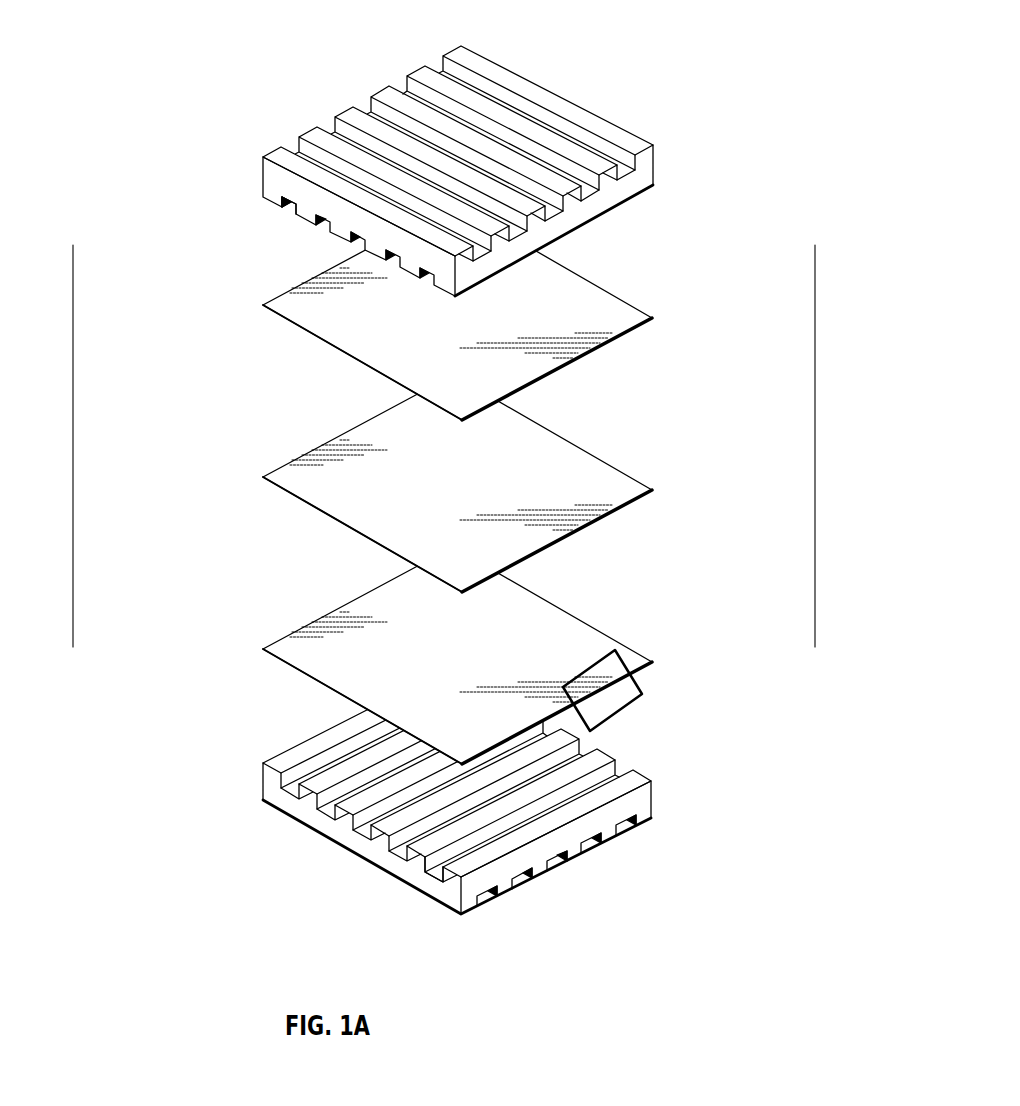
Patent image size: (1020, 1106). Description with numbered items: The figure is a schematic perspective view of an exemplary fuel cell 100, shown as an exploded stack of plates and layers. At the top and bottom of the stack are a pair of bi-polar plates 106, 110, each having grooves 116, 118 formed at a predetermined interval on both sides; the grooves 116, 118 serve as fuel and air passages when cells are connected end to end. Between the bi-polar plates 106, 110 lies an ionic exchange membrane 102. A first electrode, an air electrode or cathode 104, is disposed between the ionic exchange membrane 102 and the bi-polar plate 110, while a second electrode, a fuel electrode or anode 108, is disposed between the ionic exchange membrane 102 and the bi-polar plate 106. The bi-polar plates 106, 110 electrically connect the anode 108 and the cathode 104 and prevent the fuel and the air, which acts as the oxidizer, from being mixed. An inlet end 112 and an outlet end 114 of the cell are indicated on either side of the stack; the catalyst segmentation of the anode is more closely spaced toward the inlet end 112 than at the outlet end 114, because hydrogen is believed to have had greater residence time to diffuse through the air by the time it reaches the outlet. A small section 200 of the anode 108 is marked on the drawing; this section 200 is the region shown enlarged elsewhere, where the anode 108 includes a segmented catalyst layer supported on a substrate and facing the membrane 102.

The fuel cell 100 is at (241, 729).
The ionic exchange membrane 102 is at (585, 448).
The cathode 104 is at (585, 277).
The bi-polar plate 106 is at (553, 92).
The anode 108 is at (592, 618).
The bi-polar plate 110 is at (656, 792).
The inlet end 112 is at (58, 435).
The outlet end 114 is at (834, 421).
The groove 116 is at (295, 207).
The groove 118 is at (437, 855).
The section of the anode 200 is at (618, 690).